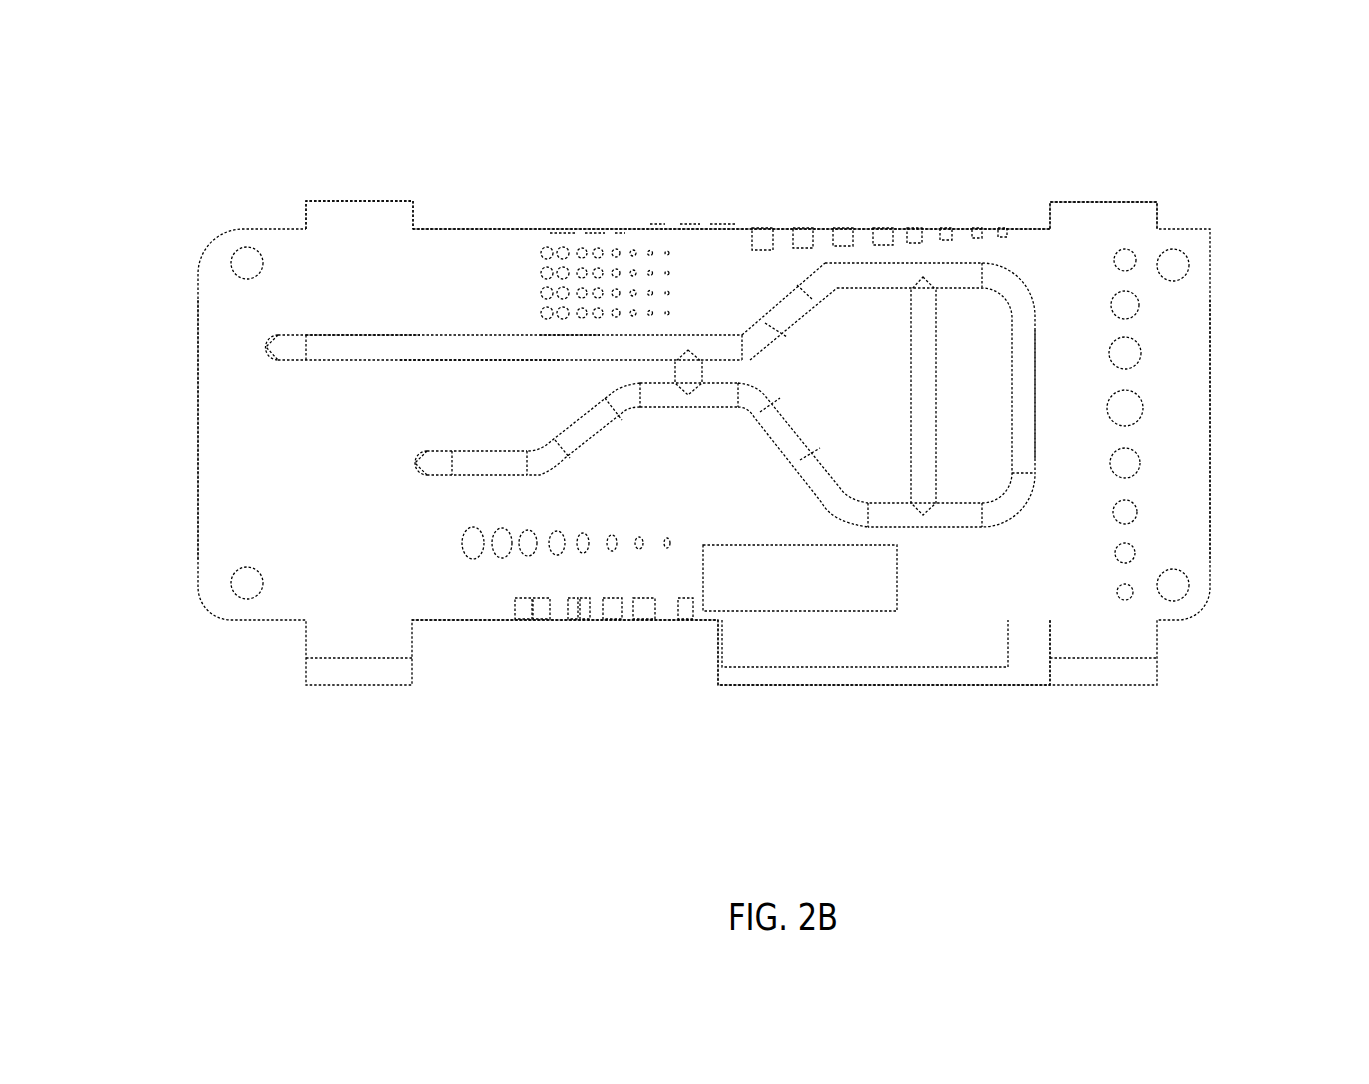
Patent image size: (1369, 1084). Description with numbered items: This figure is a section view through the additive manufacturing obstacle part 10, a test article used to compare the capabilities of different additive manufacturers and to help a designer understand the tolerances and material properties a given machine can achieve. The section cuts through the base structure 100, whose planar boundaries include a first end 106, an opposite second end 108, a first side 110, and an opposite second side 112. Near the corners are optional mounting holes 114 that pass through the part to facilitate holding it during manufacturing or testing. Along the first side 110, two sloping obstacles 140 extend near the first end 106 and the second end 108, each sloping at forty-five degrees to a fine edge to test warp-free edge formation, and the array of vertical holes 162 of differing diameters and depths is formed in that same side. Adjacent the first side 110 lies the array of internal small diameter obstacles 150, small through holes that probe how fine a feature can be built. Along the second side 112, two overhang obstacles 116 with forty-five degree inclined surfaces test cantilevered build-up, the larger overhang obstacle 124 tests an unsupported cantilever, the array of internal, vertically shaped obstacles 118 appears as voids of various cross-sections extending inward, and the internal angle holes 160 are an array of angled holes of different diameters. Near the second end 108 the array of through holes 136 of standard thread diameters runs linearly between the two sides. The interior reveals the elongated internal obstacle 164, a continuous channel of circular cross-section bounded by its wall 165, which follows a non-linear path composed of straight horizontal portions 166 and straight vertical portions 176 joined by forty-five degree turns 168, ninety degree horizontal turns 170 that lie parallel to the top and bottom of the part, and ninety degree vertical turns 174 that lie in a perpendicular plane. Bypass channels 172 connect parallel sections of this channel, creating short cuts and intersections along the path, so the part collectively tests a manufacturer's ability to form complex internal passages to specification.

The additive manufacturing obstacle part 10 is at (317, 743).
The base structure 100 is at (1173, 460).
The first end 106 is at (200, 498).
The second end 108 is at (1210, 532).
The first side 110 is at (490, 228).
The second side 112 is at (502, 620).
The mounting holes 114 is at (233, 260).
The overhang obstacles 116 is at (352, 662).
The array of internal, vertically shaped obstacles 118 is at (604, 661).
The overhang obstacle 124 is at (768, 679).
The array of through holes 136 is at (1138, 405).
The sloping obstacles 140 is at (342, 212).
The internal small diameter obstacles 150 is at (630, 258).
The internal angle holes 160 is at (557, 556).
The array of vertical holes 162 is at (873, 227).
The elongated internal obstacle 164 is at (426, 350).
The wall 165 is at (317, 335).
The straight horizontal portions 166 is at (562, 337).
The forty-five degree turns 168 is at (758, 333).
The ninety degree horizontal turns 170 is at (1018, 282).
The bypass channels 172 is at (693, 363).
The ninety degree vertical turns 174 is at (267, 350).
The straight vertical portions 176 is at (1028, 387).